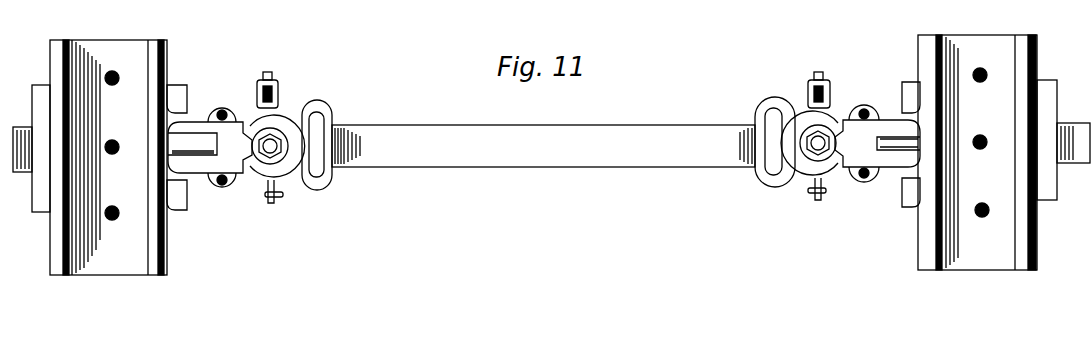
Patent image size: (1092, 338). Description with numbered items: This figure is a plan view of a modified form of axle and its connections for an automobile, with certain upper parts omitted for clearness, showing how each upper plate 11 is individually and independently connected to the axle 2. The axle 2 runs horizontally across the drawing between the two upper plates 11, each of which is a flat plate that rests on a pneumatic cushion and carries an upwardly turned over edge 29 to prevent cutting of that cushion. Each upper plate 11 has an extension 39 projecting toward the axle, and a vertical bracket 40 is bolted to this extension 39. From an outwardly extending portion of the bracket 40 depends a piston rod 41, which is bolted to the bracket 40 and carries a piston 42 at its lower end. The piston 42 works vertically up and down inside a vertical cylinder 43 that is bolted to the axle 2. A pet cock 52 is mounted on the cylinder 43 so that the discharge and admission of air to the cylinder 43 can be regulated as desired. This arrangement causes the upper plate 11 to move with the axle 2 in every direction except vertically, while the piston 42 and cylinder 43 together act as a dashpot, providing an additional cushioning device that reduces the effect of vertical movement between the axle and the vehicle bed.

The axle 2 is at (546, 160).
The upper plate 11 is at (90, 68).
The turned over edge 29 is at (175, 48).
The extension 39 is at (188, 172).
The vertical bracket 40 is at (232, 163).
The piston rod 41 is at (283, 167).
The piston 42 is at (803, 160).
The vertical cylinder 43 is at (280, 108).
The pet cock 52 is at (275, 205).